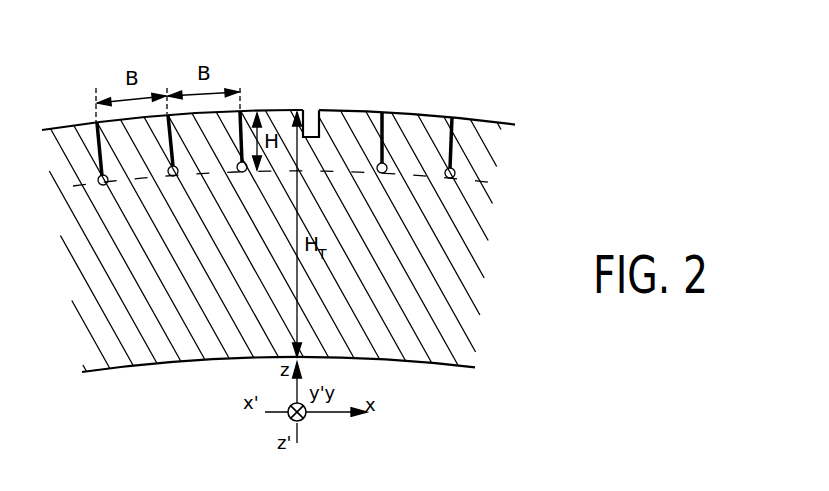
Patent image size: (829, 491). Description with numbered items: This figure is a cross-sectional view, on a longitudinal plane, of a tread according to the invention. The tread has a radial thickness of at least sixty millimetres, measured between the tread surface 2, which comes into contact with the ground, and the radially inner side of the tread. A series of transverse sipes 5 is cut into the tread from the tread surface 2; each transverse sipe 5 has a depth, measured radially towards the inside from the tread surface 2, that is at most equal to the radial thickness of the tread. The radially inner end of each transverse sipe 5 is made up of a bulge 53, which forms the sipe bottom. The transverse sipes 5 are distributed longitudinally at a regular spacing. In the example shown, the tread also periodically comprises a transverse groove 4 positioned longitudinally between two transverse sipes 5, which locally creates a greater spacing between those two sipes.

The tread surface 2 is at (502, 112).
The transverse groove 4 is at (314, 108).
The transverse sipes 5 is at (447, 118).
The bulge 53 is at (462, 172).